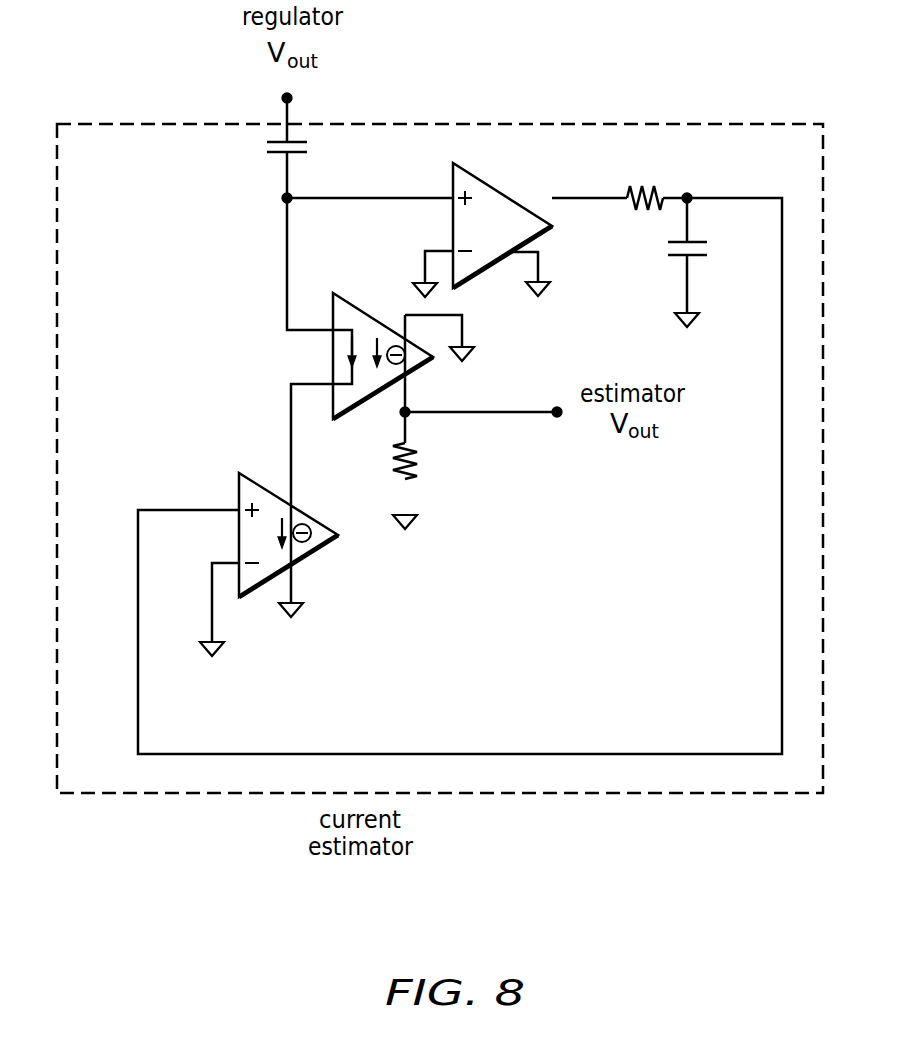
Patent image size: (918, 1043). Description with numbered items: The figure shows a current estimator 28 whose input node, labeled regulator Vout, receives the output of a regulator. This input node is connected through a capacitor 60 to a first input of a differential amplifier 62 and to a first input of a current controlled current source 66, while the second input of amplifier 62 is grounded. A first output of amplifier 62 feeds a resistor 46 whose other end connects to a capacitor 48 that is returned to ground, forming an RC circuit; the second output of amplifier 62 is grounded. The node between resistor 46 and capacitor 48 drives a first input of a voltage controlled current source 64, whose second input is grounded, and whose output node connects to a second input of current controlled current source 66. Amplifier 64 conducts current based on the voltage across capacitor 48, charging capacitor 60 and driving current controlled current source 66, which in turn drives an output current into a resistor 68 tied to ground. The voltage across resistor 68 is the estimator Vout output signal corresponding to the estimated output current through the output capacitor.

The current estimator 28 is at (463, 795).
The capacitor 60 is at (270, 152).
The differential amplifier 62 is at (478, 176).
The voltage controlled current source 64 is at (238, 483).
The current controlled current source 66 is at (340, 297).
The resistor 68 is at (415, 460).
The resistor 46 is at (641, 210).
The capacitor 48 is at (672, 256).